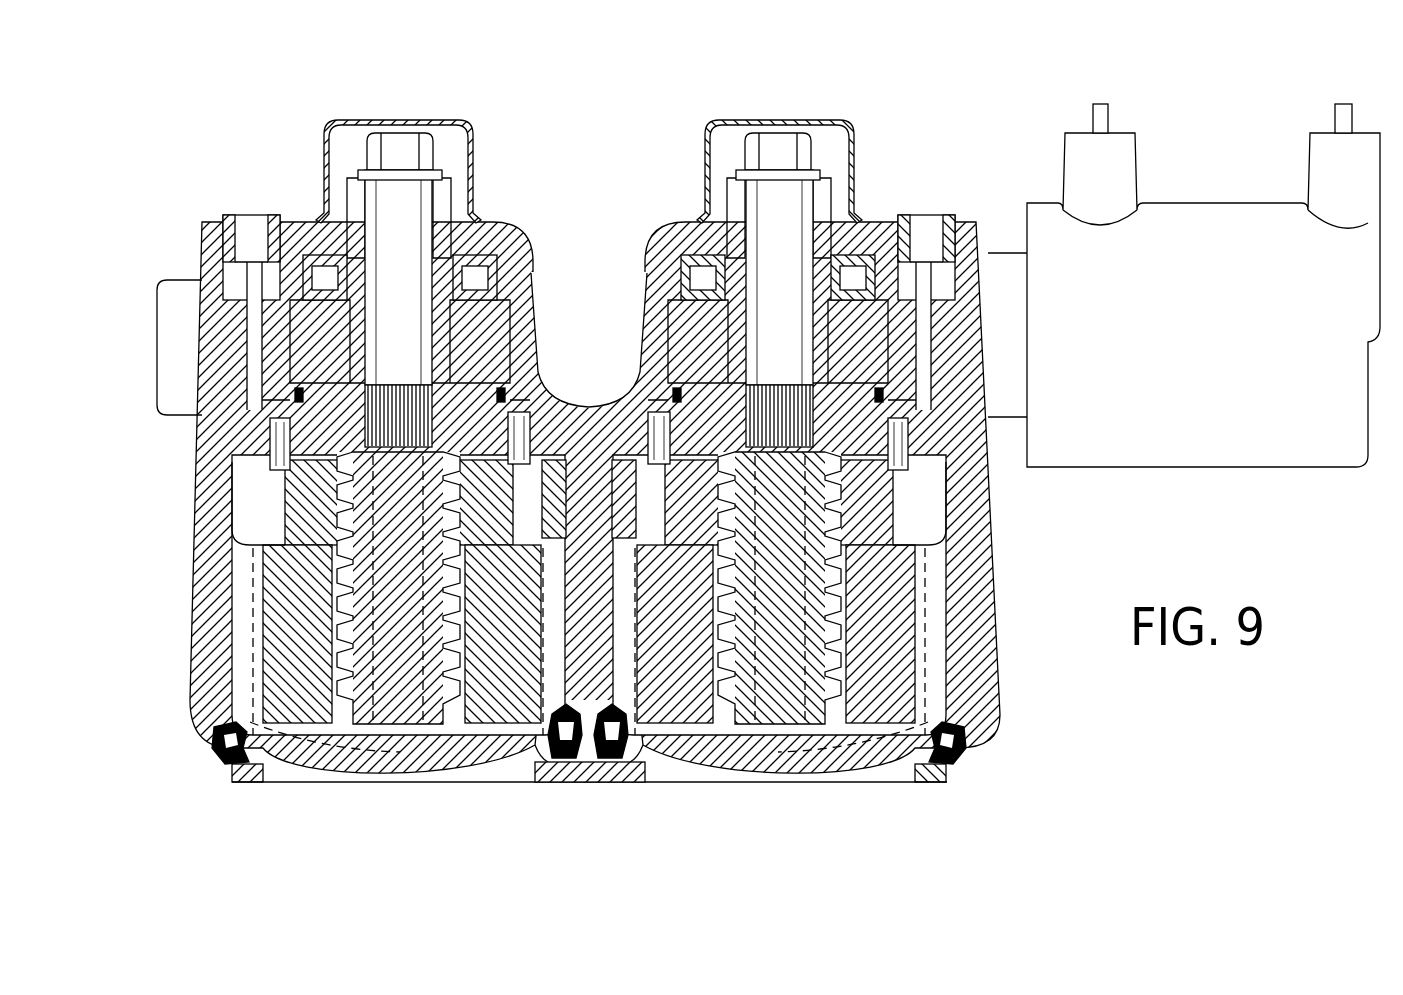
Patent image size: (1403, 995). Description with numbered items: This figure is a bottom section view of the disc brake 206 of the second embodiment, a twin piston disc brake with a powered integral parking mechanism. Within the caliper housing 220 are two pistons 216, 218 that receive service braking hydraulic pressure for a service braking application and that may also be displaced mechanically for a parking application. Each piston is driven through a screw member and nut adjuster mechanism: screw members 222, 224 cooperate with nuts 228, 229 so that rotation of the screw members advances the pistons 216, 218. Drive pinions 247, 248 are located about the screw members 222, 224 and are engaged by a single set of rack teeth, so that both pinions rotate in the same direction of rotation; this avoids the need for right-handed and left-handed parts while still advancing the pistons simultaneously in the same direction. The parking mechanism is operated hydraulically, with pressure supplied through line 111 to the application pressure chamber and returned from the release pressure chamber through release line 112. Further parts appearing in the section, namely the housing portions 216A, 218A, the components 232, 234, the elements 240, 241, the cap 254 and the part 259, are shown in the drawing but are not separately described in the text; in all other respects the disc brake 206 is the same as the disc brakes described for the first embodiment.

The disc brake 206 is at (1022, 696).
The line 111 is at (1108, 112).
The release line 112 is at (1338, 110).
The piston 216 is at (940, 592).
The housing sleeve 216A is at (645, 757).
The piston 218 is at (245, 570).
The housing sleeve 218A is at (528, 762).
The caliper housing 220 is at (210, 263).
The screw member 222 is at (770, 215).
The screw member 224 is at (390, 202).
The nut 228 is at (900, 495).
The nut 229 is at (298, 502).
The seal 232 is at (945, 447).
The seal 234 is at (275, 443).
The fitting 240 is at (593, 779).
The seal 241 is at (637, 782).
The drive pinion 247 is at (476, 330).
The drive pinion 248 is at (700, 330).
The cap 254 is at (388, 120).
The bearing 259 is at (478, 265).